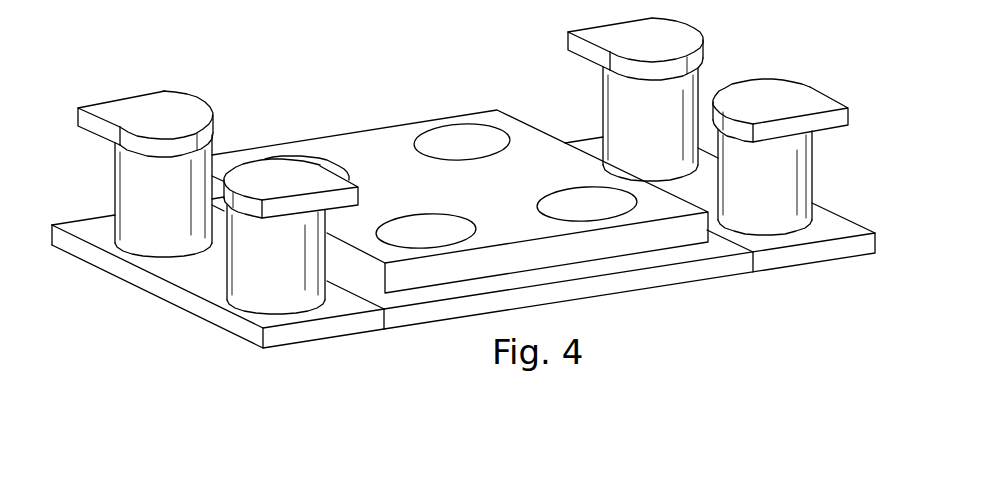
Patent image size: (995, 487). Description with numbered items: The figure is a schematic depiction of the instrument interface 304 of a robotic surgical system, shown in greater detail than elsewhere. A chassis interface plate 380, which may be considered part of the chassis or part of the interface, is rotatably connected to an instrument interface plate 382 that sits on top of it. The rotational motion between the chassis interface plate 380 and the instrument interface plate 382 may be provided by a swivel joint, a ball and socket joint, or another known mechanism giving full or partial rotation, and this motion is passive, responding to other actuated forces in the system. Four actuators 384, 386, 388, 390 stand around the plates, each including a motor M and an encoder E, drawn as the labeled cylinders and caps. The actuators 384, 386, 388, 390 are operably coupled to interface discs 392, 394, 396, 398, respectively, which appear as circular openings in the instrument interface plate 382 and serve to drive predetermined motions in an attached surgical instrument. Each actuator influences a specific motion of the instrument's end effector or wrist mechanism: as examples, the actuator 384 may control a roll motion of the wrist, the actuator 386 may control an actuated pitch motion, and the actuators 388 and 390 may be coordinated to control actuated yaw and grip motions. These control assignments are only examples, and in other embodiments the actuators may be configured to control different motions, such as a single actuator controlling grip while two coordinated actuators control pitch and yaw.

The instrument interface 304 is at (240, 58).
The chassis interface plate 380 is at (687, 272).
The instrument interface plate 382 is at (372, 145).
The actuator 384 is at (220, 267).
The actuator 386 is at (113, 172).
The actuator 388 is at (813, 168).
The actuator 390 is at (603, 98).
The interface disc 392 is at (442, 222).
The interface disc 394 is at (322, 150).
The interface disc 396 is at (565, 206).
The interface disc 398 is at (447, 137).